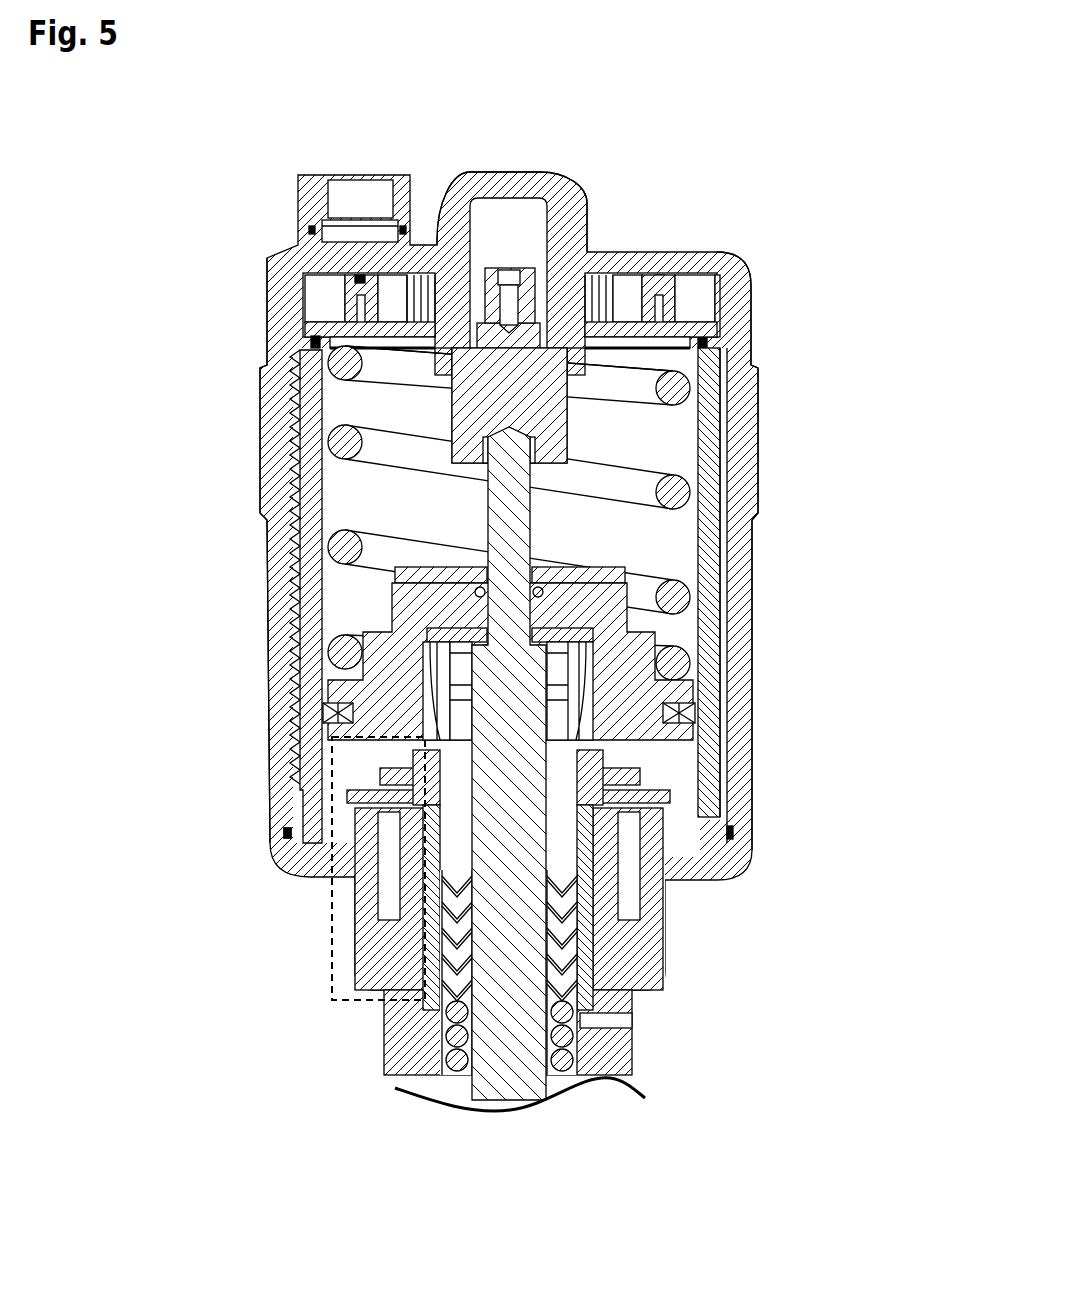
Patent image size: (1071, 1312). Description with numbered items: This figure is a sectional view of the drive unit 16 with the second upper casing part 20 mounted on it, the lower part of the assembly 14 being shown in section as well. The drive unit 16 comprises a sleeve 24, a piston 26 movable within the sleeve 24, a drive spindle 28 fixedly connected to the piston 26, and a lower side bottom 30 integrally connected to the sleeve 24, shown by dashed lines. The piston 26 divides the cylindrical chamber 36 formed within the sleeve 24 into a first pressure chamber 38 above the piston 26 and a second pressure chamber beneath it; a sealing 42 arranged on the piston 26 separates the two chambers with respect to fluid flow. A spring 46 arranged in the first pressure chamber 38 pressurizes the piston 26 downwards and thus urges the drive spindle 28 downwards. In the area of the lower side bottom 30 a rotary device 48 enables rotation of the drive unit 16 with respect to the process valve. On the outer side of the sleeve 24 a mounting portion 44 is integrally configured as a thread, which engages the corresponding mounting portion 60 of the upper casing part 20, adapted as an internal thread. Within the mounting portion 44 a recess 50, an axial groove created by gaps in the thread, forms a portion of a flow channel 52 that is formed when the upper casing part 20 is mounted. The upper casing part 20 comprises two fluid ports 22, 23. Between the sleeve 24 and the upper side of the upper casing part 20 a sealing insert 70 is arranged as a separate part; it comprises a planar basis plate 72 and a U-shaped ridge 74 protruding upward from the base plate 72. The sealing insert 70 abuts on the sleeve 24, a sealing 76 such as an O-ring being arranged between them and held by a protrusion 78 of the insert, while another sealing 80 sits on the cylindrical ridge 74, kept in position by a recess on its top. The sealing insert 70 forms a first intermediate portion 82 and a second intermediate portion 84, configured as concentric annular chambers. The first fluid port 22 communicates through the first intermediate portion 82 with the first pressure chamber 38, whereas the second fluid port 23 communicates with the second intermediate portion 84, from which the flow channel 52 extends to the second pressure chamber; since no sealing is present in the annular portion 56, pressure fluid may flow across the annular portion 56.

The lower housing part 14 is at (407, 1005).
The drive unit 16 is at (300, 355).
The upper casing part 20 is at (265, 270).
The first fluid port 22 is at (348, 195).
The second fluid port 23 is at (437, 180).
The sleeve 24 is at (707, 378).
The piston 26 is at (378, 667).
The drive spindle 28 is at (503, 1060).
The lower side bottom 30 is at (353, 890).
The cylindrical chamber 36 is at (660, 540).
The first pressure chamber 38 is at (630, 418).
The sealing 42 is at (322, 715).
The mounting portion 44 is at (275, 403).
The spring 46 is at (345, 355).
The rotary device 48 is at (285, 834).
The recess 50 is at (730, 450).
The flow channel 52 is at (751, 343).
The annular portion 56 is at (740, 750).
The mounting portion 60 is at (290, 452).
The sealing insert 70 is at (695, 272).
The planar basis plate 72 is at (612, 300).
The U-shaped ridge 74 is at (657, 278).
The sealing 76 is at (752, 308).
The protrusion 78 is at (745, 295).
The sealing 80 is at (660, 275).
The first intermediate portion 82 is at (393, 300).
The second intermediate portion 84 is at (300, 305).